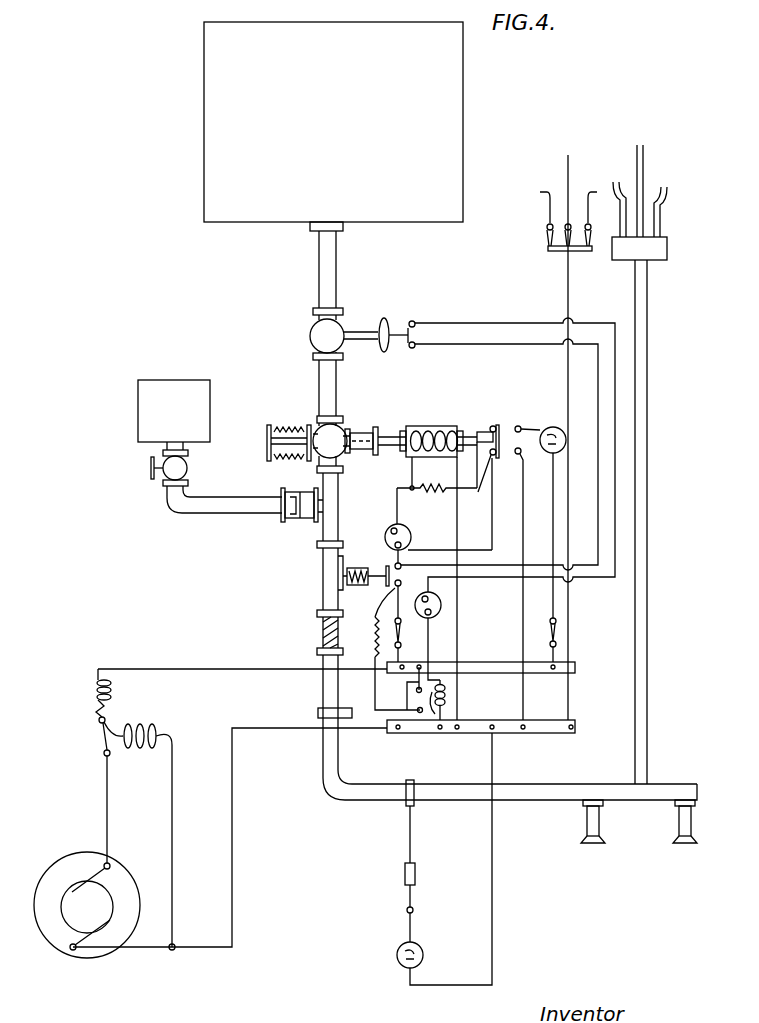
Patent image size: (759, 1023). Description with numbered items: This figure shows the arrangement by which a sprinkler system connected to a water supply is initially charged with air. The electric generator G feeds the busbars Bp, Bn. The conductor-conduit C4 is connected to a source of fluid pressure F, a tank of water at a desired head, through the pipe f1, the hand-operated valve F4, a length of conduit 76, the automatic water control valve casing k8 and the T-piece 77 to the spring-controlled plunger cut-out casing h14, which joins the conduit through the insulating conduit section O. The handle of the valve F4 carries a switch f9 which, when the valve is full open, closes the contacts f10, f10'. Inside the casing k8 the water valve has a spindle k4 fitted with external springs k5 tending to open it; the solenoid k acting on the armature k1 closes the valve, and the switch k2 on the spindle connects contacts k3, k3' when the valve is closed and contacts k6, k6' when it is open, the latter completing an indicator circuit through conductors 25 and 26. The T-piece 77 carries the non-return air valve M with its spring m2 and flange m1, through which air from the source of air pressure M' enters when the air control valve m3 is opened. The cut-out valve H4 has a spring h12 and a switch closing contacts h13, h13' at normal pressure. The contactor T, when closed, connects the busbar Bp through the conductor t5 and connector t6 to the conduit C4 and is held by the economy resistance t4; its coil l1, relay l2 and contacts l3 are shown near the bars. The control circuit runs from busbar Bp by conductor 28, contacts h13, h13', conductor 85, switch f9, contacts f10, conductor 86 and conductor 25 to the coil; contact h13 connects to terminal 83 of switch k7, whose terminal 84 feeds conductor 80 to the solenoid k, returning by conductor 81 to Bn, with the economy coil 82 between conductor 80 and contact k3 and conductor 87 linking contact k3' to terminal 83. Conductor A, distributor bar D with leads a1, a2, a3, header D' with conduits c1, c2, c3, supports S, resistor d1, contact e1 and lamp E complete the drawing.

The source of fluid pressure F is at (333, 126).
The pipe f1 is at (330, 272).
The hand-operated valve F4 is at (311, 334).
The switch f9 is at (410, 322).
The contacts f10 is at (435, 313).
The contact f10' is at (463, 325).
The length of conduit 76 is at (330, 384).
The solenoid k is at (428, 426).
The spindle k4 is at (267, 441).
The external springs k5 is at (289, 430).
The automatic water control valve casing k8 is at (356, 429).
The armature k1 is at (459, 428).
The contact k3 is at (488, 445).
The switch k2 is at (500, 428).
The contact k3' is at (483, 482).
The contact k6 is at (540, 533).
The contact k6' is at (531, 584).
The conductor 25 is at (524, 530).
The conductor 26 is at (571, 530).
The conductor 80 is at (397, 488).
The economy coil 82 is at (437, 479).
The switch k7 is at (404, 531).
The terminal 84 is at (392, 527).
The terminal 83 is at (402, 545).
The conductor 81 is at (459, 542).
The conductor 87 is at (494, 522).
The conductor A is at (565, 385).
The conductor 86 is at (614, 323).
The conductor 85 is at (597, 385).
The T-piece 77 is at (340, 490).
The spring-controlled plunger cut-out casing h14 is at (322, 556).
The spring-controlled cut-out valve H4 is at (322, 578).
The spring h12 is at (356, 567).
The contact h13 is at (384, 557).
The contact h13' is at (379, 621).
The conductor 28 is at (373, 621).
The economy resistance t4 is at (373, 650).
The insulating conduit section O is at (321, 631).
The conductor-conduit C4 is at (320, 688).
The conductor t5 is at (348, 707).
The connector t6 is at (322, 718).
The relay l2 is at (441, 607).
The positive busbar Bp is at (536, 657).
The negative busbar Bn is at (542, 717).
The relay contact l3 is at (412, 700).
The relay coil l1 is at (446, 690).
The contactor T is at (445, 713).
The distributor bar D is at (562, 260).
The conductor a1 is at (538, 193).
The conductor a2 is at (566, 166).
The conductor a3 is at (590, 186).
The header D' is at (635, 510).
The conduit c1 is at (614, 181).
The conduit c2 is at (640, 144).
The conduit c3 is at (664, 186).
The support S is at (673, 841).
The resistor d1 is at (404, 875).
The contact e1 is at (406, 911).
The lamp E is at (398, 960).
The source of air pressure M' is at (174, 411).
The air control valve m3 is at (162, 477).
The non-return air valve M is at (293, 514).
The flange m1 is at (285, 492).
The spring m2 is at (301, 492).
The electric generator G is at (210, 813).